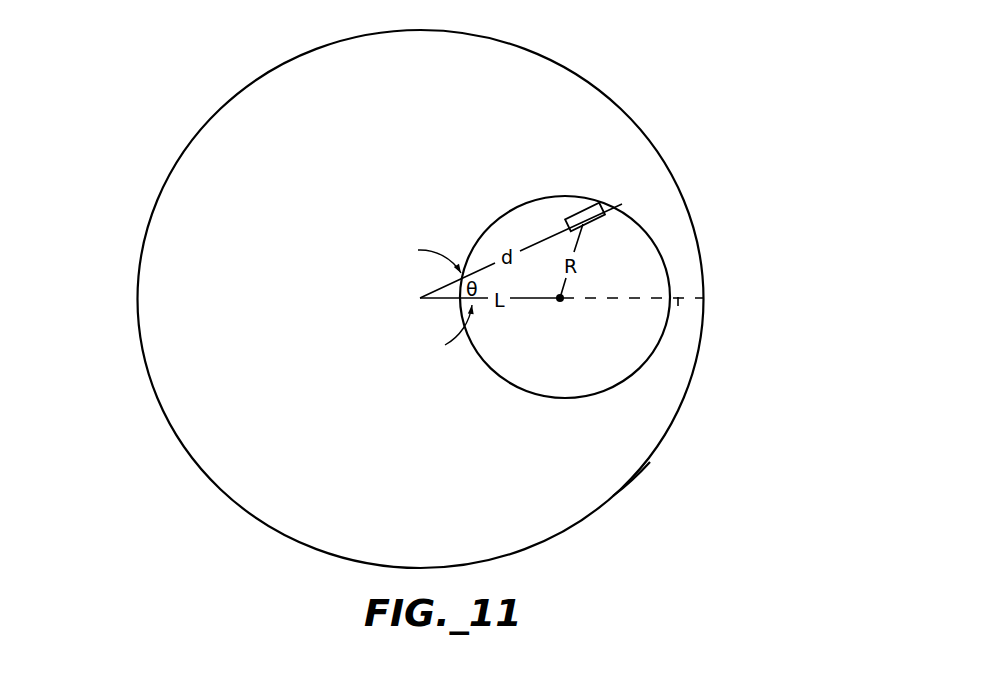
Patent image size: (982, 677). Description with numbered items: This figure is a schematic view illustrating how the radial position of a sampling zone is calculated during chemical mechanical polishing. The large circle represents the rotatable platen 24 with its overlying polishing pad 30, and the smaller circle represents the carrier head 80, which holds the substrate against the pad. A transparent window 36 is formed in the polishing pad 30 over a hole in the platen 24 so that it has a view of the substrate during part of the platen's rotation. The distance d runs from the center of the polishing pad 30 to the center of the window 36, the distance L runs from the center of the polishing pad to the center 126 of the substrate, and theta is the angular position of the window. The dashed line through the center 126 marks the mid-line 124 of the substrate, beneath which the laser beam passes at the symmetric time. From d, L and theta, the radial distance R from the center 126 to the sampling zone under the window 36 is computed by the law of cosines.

The platen 24 is at (663, 440).
The polishing pad 30 is at (620, 468).
The transparent window 36 is at (620, 207).
The carrier head 80 is at (652, 237).
The mid-line 124 is at (678, 306).
The center 126 is at (560, 303).